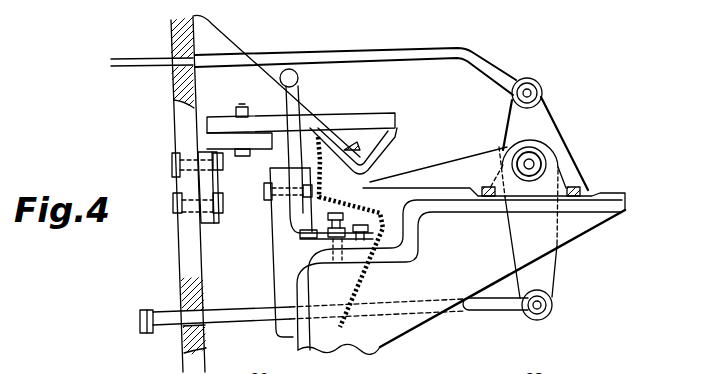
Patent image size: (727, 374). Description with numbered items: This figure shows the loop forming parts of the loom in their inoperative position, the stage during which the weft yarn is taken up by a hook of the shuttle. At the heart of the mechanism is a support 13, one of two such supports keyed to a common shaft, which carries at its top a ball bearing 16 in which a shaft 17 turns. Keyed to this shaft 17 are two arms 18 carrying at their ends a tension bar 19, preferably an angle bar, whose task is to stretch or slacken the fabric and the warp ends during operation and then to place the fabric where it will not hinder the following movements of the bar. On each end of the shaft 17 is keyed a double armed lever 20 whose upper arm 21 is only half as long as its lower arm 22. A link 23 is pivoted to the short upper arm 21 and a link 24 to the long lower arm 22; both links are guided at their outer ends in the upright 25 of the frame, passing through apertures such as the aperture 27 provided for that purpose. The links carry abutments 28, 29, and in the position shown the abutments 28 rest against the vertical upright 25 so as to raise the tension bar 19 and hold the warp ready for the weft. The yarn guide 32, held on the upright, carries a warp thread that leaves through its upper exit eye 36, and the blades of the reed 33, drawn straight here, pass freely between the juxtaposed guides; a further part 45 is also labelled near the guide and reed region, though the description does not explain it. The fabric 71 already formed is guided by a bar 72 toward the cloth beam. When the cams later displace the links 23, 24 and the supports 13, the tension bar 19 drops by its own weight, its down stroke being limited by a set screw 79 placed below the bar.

The support 13 is at (357, 337).
The ball bearing 16 is at (552, 166).
The shaft 17 is at (529, 164).
The arm 18 is at (448, 180).
The tension bar 19 is at (173, 157).
The double armed lever 20 is at (505, 149).
The upper arm 21 is at (537, 110).
The lower arm 22 is at (538, 282).
The link 23 is at (438, 48).
The link 24 is at (477, 313).
The upright 25 is at (180, 115).
The aperture 27 is at (183, 330).
The abutment 28 is at (195, 54).
The abutment 29 is at (140, 313).
The yarn guide 32 is at (337, 126).
The reed 33 is at (345, 116).
The upper exit eye 36 is at (236, 53).
The lug 45 is at (357, 137).
The fabric 71 is at (383, 336).
The bar 72 is at (277, 247).
The set screw 79 is at (330, 220).